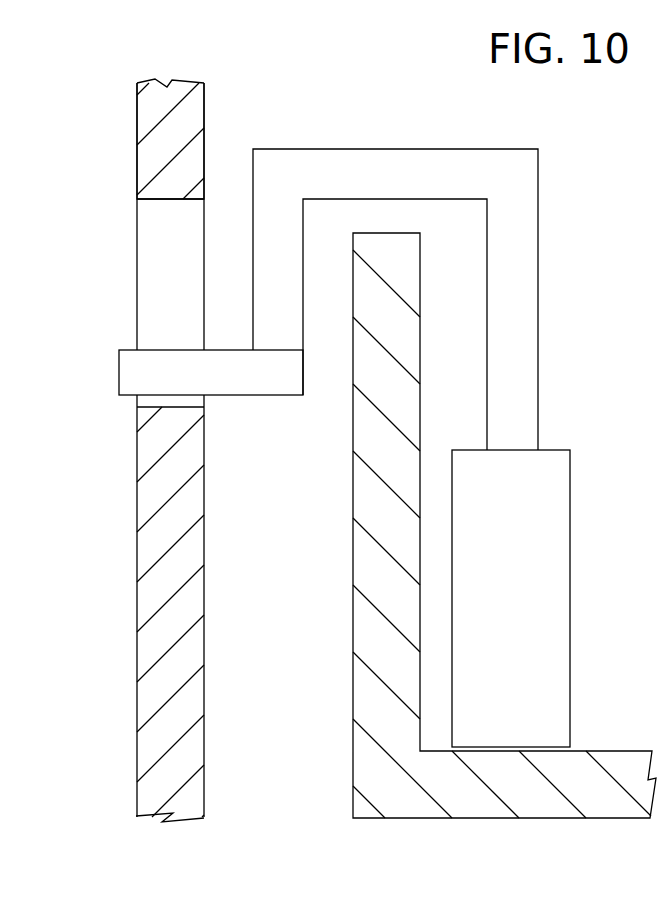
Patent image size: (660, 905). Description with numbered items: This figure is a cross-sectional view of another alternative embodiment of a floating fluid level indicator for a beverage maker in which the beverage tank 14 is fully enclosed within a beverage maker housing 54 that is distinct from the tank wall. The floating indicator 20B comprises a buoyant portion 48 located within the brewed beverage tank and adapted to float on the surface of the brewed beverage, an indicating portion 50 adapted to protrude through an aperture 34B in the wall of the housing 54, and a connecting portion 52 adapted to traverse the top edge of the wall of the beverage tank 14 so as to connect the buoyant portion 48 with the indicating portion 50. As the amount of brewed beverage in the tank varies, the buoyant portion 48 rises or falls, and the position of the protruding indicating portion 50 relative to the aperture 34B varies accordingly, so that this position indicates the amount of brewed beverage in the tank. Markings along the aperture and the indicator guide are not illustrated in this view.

The beverage tank 14 is at (357, 773).
The floating indicator 20B is at (354, 432).
The aperture 34B is at (150, 257).
The buoyant portion 48 is at (557, 565).
The indicating portion 50 is at (132, 382).
The connecting portion 52 is at (483, 157).
The beverage maker housing 54 is at (137, 103).